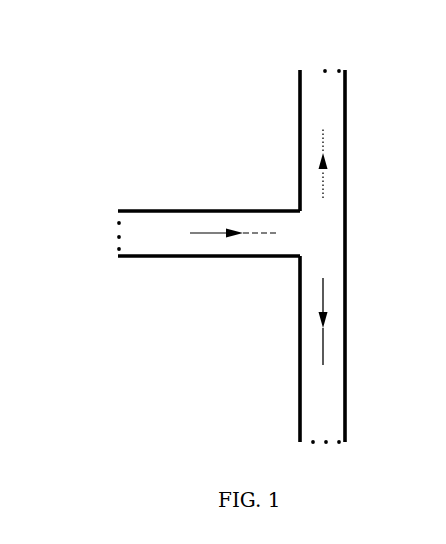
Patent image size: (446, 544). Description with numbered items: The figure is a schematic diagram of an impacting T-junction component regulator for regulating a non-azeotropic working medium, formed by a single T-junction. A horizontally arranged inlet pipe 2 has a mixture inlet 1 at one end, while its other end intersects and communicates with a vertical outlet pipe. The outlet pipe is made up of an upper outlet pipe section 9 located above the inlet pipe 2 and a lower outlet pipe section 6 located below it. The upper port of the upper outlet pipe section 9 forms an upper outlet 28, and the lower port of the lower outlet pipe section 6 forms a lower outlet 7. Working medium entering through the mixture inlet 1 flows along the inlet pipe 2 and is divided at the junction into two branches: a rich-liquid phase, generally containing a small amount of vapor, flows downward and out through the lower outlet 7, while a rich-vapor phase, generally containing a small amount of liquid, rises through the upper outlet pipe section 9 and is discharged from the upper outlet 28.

The mixture inlet 1 is at (110, 226).
The inlet pipe 2 is at (245, 204).
The upper outlet 28 is at (318, 66).
The upper outlet pipe section 9 is at (354, 131).
The lower outlet pipe section 6 is at (354, 359).
The lower outlet 7 is at (333, 452).